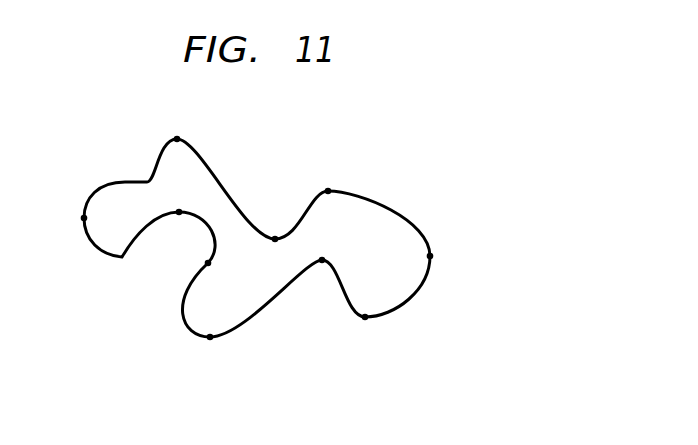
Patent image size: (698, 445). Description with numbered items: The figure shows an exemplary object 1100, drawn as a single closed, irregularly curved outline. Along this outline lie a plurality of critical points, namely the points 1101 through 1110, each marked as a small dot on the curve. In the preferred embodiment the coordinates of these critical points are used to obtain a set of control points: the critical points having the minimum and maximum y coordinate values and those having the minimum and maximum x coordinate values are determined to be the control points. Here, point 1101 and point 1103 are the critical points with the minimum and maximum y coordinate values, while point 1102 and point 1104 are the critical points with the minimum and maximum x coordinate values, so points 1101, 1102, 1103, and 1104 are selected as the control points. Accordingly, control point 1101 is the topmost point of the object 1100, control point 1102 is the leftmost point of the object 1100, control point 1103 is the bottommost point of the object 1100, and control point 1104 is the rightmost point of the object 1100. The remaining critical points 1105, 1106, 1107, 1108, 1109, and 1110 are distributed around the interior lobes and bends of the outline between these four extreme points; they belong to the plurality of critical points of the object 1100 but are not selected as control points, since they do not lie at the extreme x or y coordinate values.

The object 1100 is at (382, 205).
The control point 1101 is at (177, 137).
The control point 1102 is at (82, 217).
The control point 1103 is at (209, 339).
The control point 1104 is at (431, 254).
The critical point 1105 is at (178, 215).
The critical point 1106 is at (209, 266).
The critical point 1107 is at (322, 263).
The critical point 1108 is at (366, 320).
The critical point 1109 is at (329, 189).
The critical point 1110 is at (275, 237).